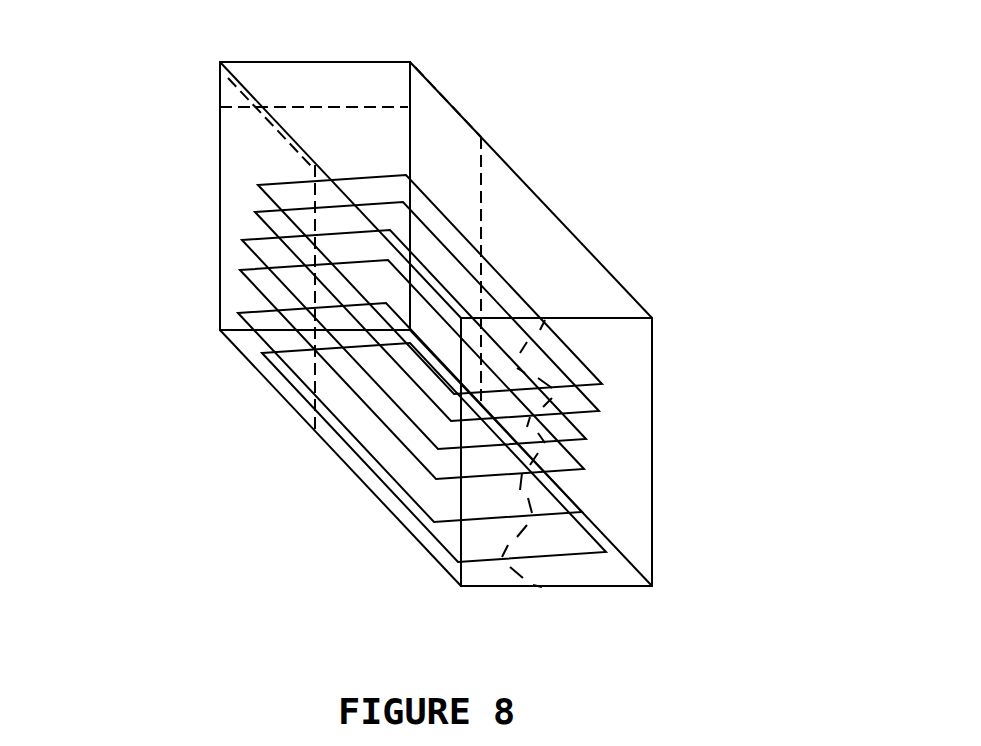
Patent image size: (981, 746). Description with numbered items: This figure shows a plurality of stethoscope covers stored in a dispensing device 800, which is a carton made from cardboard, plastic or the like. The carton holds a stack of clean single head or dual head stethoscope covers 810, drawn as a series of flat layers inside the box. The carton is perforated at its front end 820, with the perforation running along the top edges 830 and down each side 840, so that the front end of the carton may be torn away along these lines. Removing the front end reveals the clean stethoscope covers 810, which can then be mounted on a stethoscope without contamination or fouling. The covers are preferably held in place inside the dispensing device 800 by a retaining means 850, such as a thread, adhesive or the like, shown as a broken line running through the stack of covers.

The dispensing device 800 is at (549, 324).
The stethoscope covers 810 is at (309, 368).
The front end 820 is at (365, 58).
The top edges 830 is at (480, 167).
The sides 840 is at (596, 284).
The retaining means 850 is at (669, 453).